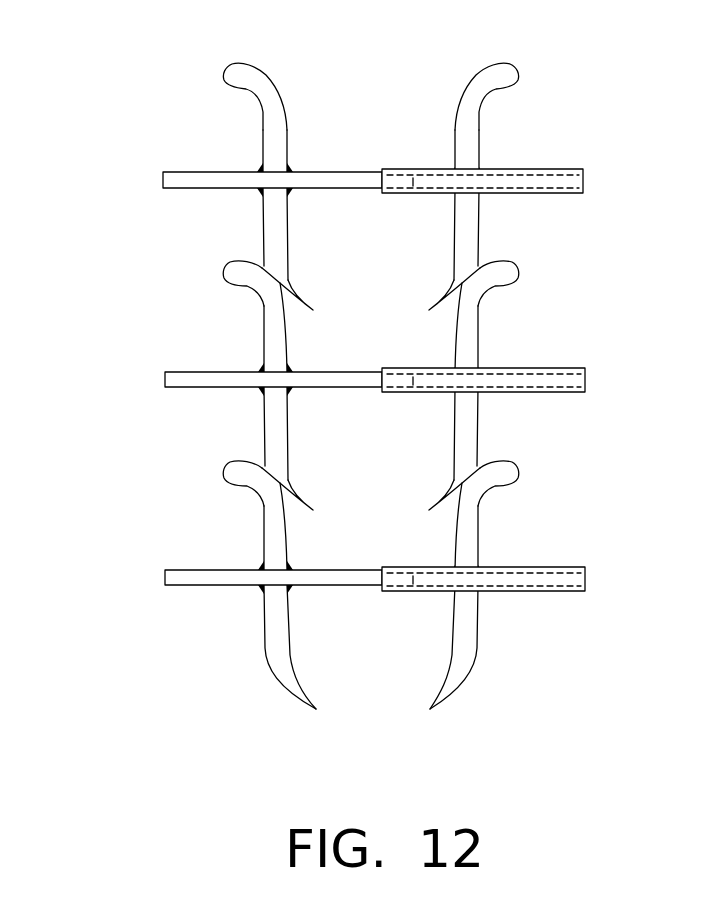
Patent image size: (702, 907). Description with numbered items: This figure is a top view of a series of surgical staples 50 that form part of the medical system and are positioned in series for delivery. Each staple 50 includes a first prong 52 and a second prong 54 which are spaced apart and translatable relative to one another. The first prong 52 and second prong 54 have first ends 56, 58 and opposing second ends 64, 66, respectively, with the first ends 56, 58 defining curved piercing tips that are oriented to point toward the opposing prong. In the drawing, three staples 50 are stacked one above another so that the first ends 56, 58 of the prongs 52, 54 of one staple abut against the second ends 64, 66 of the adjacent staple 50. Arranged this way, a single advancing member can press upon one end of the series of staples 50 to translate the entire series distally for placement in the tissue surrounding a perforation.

The staple 50 is at (160, 94).
The first prong 52 is at (283, 148).
The second prong 54 is at (458, 145).
The first end of first prong 56 is at (288, 277).
The first end of second prong 58 is at (458, 280).
The second end of first prong 64 is at (263, 80).
The second end of second prong 66 is at (472, 86).